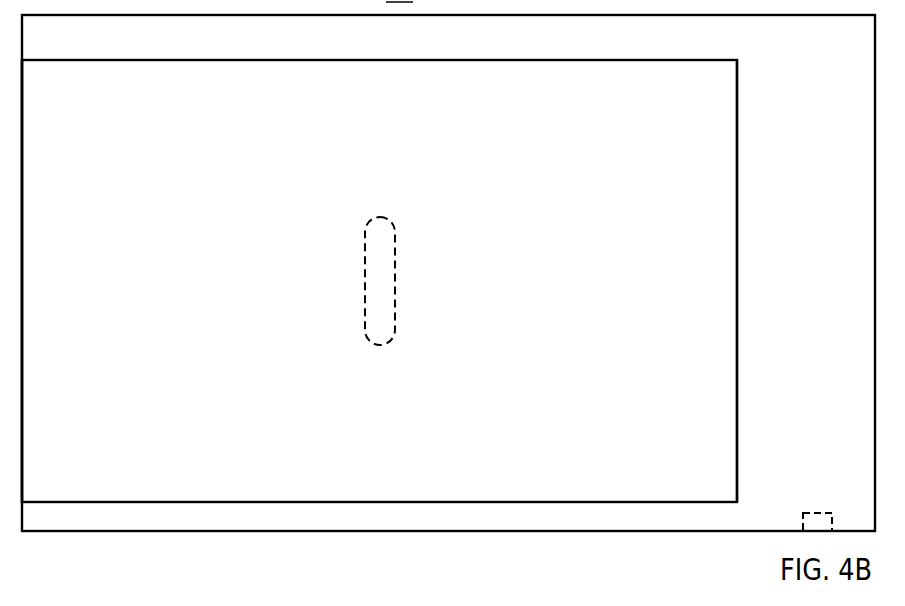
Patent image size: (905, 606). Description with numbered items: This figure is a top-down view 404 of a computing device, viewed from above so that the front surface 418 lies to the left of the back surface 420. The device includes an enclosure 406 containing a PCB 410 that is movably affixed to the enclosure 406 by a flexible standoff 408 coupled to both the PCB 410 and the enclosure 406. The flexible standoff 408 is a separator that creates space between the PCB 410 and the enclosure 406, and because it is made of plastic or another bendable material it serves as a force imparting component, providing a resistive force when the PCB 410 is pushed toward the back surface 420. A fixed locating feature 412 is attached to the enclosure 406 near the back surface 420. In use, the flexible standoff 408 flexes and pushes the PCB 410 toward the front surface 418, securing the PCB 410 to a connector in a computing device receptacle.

The top-down view 404 is at (474, 533).
The enclosure 406 is at (508, 42).
The flexible standoff 408 is at (383, 272).
The PCB 410 is at (418, 88).
The fixed locating feature 412 is at (818, 508).
The front surface 418 is at (175, 318).
The back surface 420 is at (870, 484).